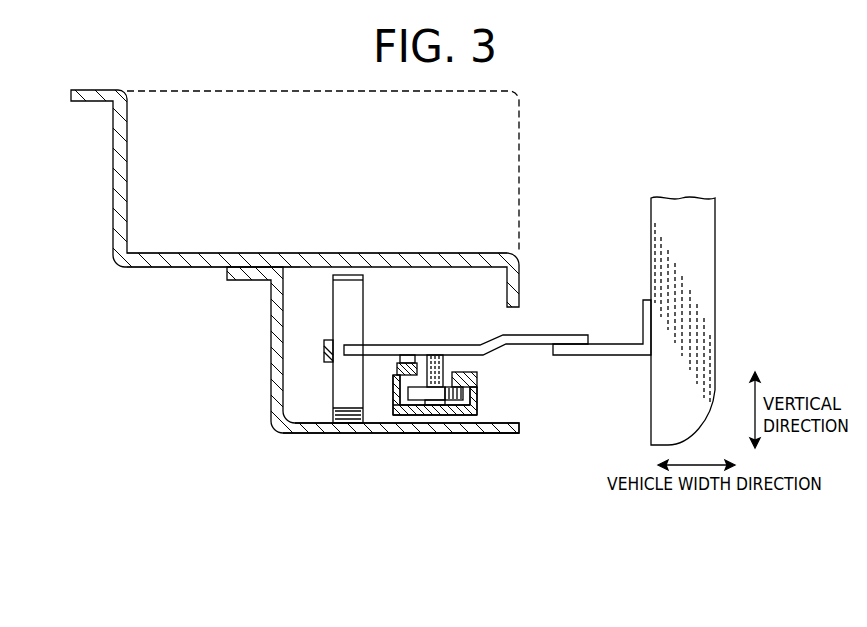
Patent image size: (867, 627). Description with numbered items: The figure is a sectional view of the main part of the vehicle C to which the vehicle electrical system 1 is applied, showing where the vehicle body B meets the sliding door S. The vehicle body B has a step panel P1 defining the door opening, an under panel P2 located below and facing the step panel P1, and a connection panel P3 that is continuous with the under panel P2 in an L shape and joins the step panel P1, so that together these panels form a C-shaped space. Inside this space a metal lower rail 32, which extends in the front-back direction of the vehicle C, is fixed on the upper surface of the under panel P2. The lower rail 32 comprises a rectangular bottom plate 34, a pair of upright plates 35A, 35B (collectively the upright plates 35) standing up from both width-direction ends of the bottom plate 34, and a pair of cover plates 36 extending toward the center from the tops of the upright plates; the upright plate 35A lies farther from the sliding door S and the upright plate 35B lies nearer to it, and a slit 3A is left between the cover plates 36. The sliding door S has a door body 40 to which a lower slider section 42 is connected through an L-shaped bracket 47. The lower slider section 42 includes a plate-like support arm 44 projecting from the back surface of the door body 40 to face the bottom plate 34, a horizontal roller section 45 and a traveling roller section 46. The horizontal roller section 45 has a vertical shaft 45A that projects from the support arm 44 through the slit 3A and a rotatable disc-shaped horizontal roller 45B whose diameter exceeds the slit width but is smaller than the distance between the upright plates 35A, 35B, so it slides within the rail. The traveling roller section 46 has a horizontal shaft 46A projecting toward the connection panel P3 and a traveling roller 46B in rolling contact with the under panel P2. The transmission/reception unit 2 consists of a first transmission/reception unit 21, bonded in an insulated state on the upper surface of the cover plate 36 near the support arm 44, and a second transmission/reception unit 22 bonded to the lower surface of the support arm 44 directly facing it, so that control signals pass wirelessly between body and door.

The vehicle electrical system 1 is at (688, 140).
The transmission/reception unit 2 is at (530, 419).
The slit 3A is at (455, 371).
The first transmission/reception unit 21 is at (430, 355).
The second transmission/reception unit 22 is at (400, 357).
The lower rail 32 is at (475, 412).
The bottom plate 34 is at (457, 419).
The upright plate 35 is at (447, 417).
The upright plate 35A is at (393, 396).
The upright plate 35B is at (477, 395).
The cover plate 36 is at (363, 425).
The door body 40 is at (695, 297).
The lower slider section 42 is at (405, 419).
The support arm 44 is at (540, 335).
The horizontal roller section 45 is at (435, 473).
The vertical shaft 45A is at (437, 404).
The horizontal roller 45B is at (417, 398).
The traveling roller section 46 is at (278, 390).
The horizontal shaft 46A is at (330, 424).
The traveling roller 46B is at (343, 400).
The L-shaped bracket 47 is at (613, 344).
The vehicle body B is at (113, 241).
The vehicle C is at (100, 206).
The step panel P1 is at (472, 262).
The under panel P2 is at (490, 430).
The connection panel P3 is at (270, 350).
The sliding door S is at (714, 321).